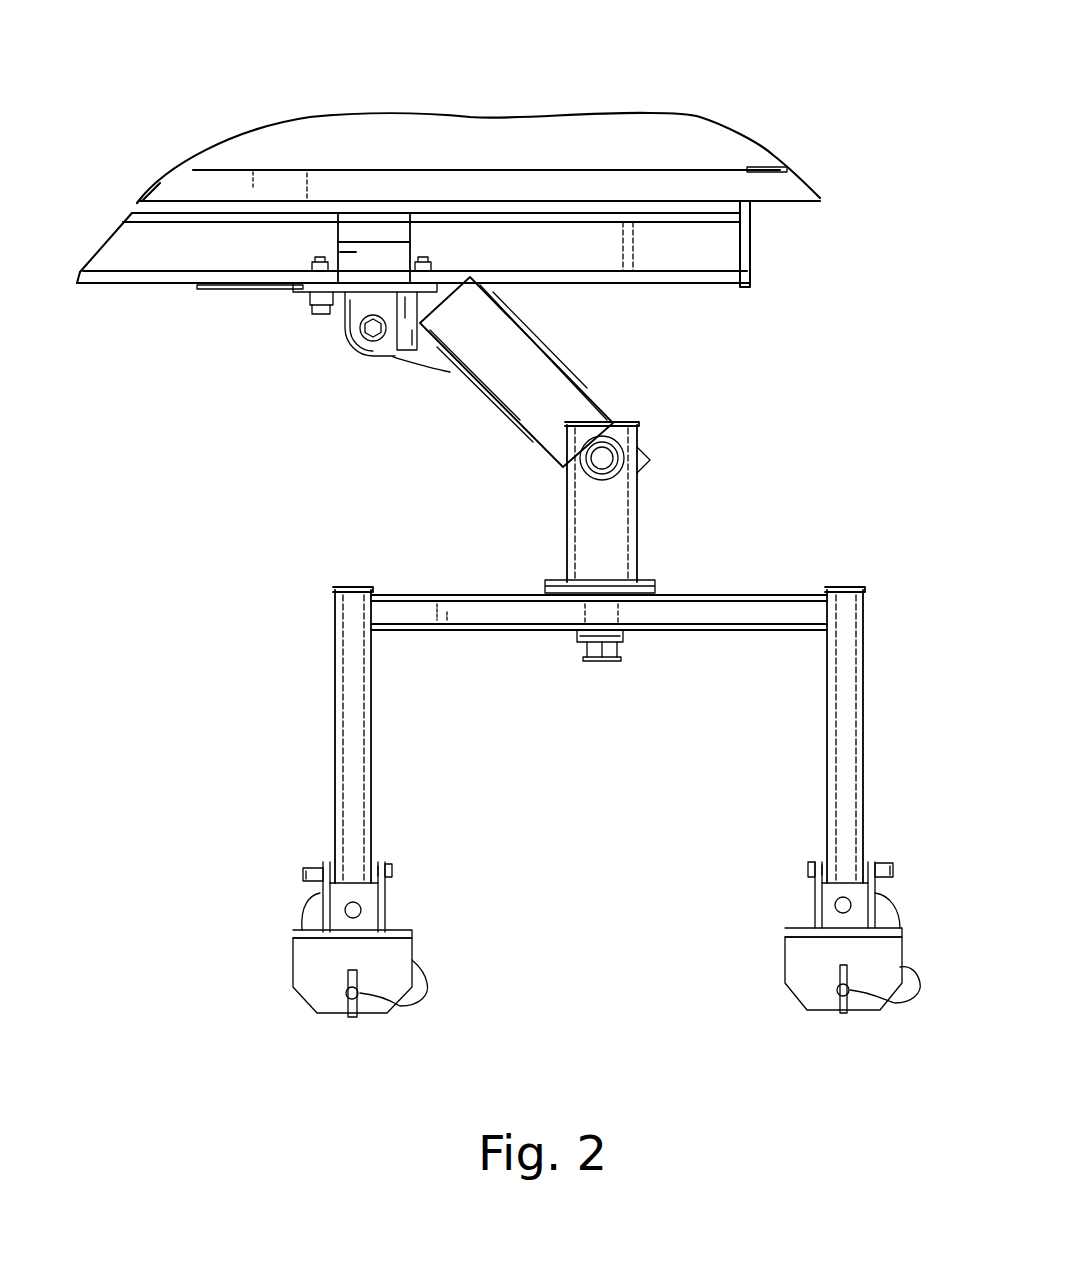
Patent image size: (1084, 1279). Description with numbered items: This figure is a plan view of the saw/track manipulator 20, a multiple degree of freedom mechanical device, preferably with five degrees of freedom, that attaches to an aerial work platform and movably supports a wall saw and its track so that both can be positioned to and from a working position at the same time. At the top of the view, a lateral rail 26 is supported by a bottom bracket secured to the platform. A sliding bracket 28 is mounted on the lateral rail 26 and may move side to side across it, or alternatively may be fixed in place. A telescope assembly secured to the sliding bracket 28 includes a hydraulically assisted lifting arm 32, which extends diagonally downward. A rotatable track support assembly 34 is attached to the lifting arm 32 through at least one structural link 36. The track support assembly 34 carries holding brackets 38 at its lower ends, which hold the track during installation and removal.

The saw/track manipulator 20 is at (298, 588).
The lateral rail 26 is at (725, 247).
The sliding bracket 28 is at (370, 232).
The lifting arm 32 is at (347, 343).
The rotatable track support assembly 34 is at (888, 817).
The structural link 36 is at (640, 390).
The holding brackets 38 is at (790, 963).